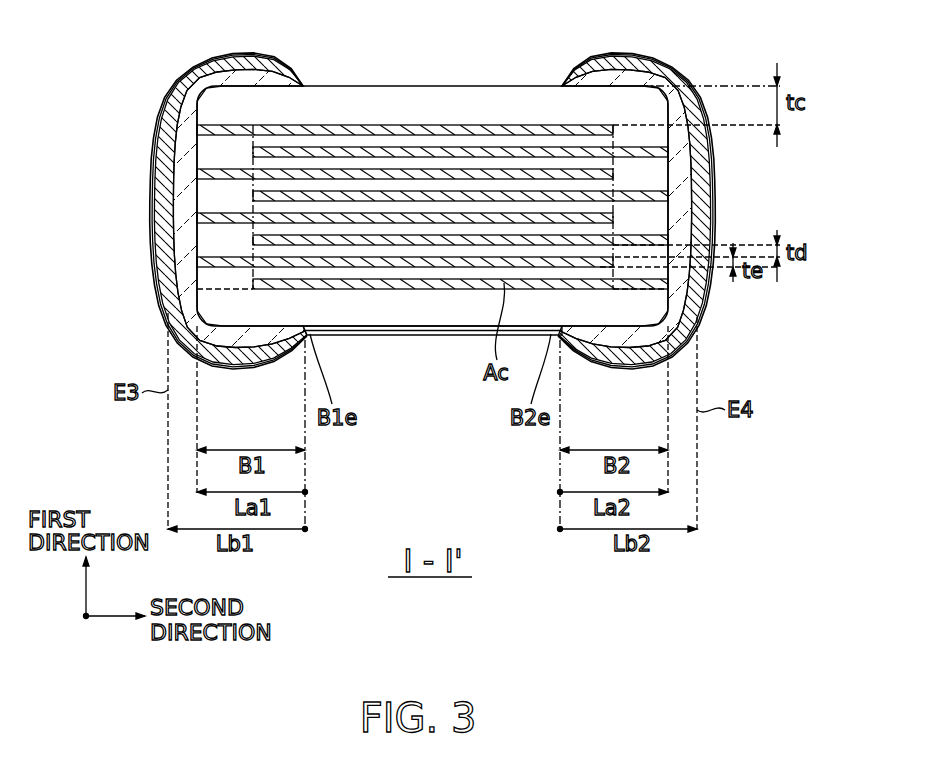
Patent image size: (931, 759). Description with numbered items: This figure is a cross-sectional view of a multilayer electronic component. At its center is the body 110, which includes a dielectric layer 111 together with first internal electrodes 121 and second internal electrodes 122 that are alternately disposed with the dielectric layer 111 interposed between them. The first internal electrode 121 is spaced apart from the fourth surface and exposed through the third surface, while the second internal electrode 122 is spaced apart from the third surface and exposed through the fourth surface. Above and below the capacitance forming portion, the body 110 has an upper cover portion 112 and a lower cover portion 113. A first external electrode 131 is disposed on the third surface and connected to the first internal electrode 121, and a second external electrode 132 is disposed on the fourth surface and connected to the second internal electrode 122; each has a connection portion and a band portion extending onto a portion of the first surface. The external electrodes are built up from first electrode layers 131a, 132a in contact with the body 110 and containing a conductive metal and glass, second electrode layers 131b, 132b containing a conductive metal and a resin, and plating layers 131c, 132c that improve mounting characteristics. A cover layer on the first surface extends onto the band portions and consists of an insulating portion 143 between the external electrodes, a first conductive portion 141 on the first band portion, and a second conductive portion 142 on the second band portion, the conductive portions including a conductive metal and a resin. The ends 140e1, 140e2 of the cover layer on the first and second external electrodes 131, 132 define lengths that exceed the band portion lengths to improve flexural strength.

The body 110 is at (367, 86).
The dielectric layer 111 is at (295, 125).
The upper cover portion 112 is at (433, 100).
The lower cover portion 113 is at (447, 310).
The first internal electrode 121 is at (475, 125).
The second internal electrode 122 is at (537, 147).
The first external electrode 131 is at (166, 211).
The first electrode layer of first external electrode 131a is at (185, 173).
The second electrode layer of first external electrode 131b is at (158, 208).
The plating layer of first external electrode 131c is at (80, 165).
The second external electrode 132 is at (701, 211).
The first electrode layer of second external electrode 132a is at (683, 166).
The second electrode layer of second external electrode 132b is at (710, 186).
The plating layer of second external electrode 132c is at (719, 212).
The end of the cover layer disposed on the first external electrode 140e1 is at (167, 313).
The end of the cover layer disposed on the second external electrode 140e2 is at (700, 318).
The first conductive portion 141 is at (243, 369).
The second conductive portion 142 is at (621, 369).
The insulating portion 143 is at (352, 337).